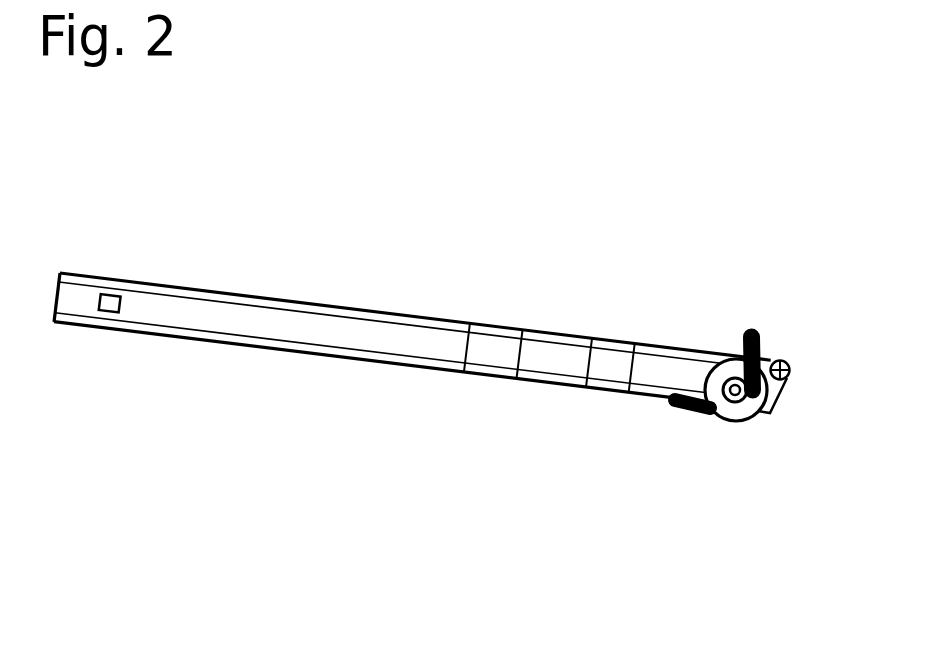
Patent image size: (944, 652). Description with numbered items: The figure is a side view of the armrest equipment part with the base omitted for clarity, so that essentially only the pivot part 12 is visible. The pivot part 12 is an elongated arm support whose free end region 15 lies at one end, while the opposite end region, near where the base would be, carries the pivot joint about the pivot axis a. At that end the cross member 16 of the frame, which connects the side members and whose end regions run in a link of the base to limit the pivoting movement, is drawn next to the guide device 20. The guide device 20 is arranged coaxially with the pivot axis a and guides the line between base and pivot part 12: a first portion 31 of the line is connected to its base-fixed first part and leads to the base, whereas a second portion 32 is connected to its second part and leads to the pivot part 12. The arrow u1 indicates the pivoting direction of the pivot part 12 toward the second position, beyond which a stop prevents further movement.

The pivot part 12 is at (353, 315).
The free end region 15 is at (55, 342).
The cross member 16 is at (784, 359).
The guide device 20 is at (737, 427).
The first portion 31 is at (738, 333).
The second portion 32 is at (692, 412).
The pivot axis a is at (722, 382).
The direction u1 is at (107, 257).